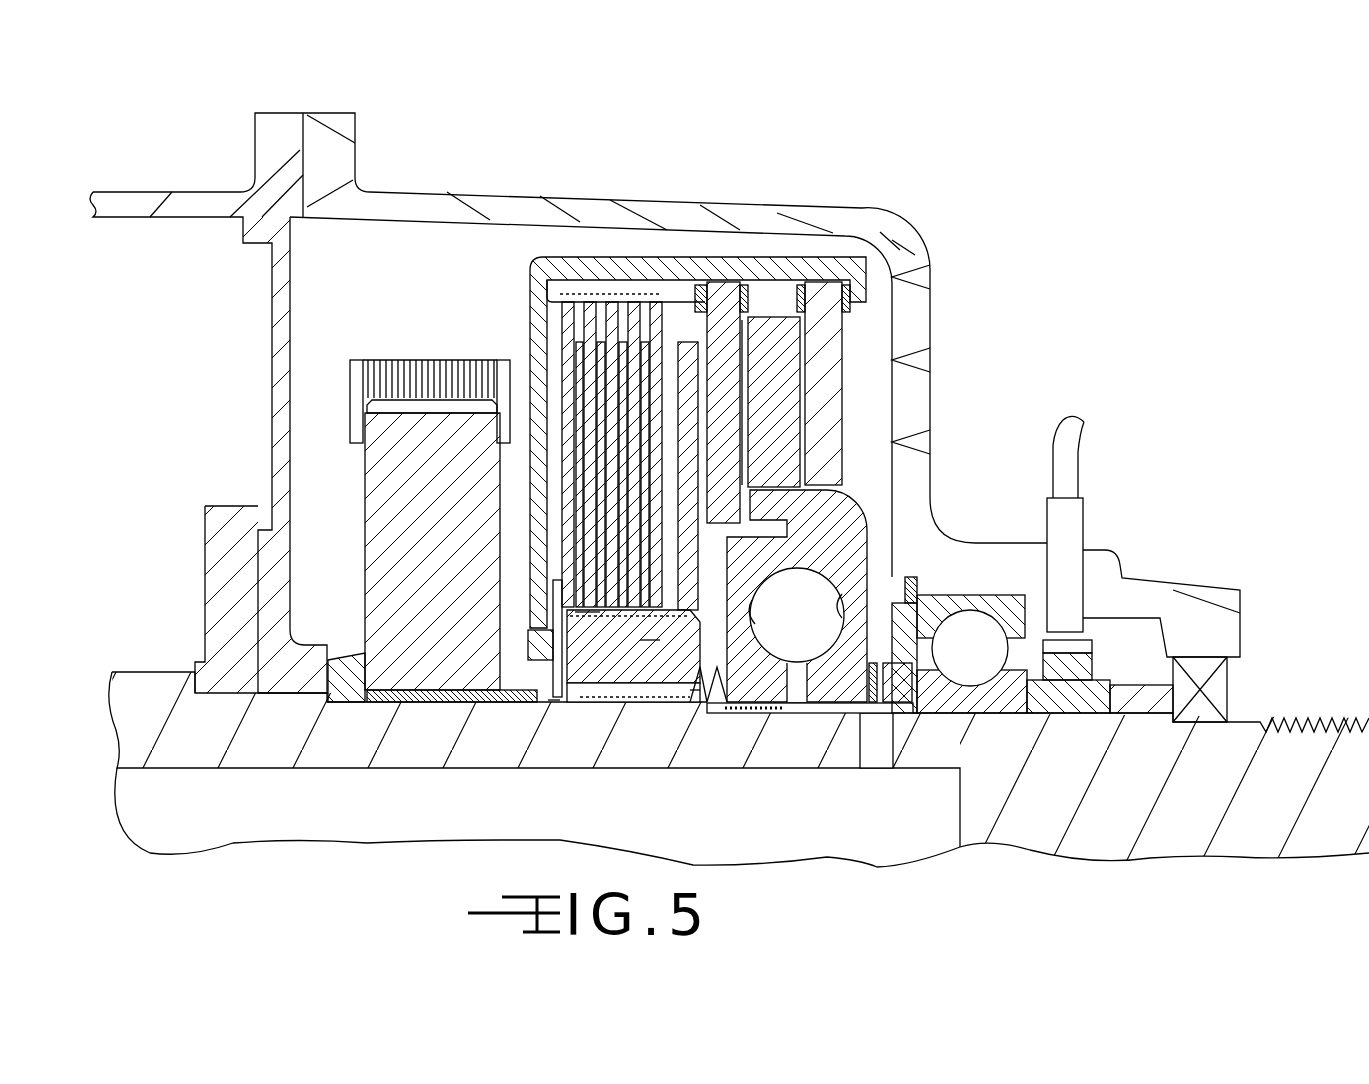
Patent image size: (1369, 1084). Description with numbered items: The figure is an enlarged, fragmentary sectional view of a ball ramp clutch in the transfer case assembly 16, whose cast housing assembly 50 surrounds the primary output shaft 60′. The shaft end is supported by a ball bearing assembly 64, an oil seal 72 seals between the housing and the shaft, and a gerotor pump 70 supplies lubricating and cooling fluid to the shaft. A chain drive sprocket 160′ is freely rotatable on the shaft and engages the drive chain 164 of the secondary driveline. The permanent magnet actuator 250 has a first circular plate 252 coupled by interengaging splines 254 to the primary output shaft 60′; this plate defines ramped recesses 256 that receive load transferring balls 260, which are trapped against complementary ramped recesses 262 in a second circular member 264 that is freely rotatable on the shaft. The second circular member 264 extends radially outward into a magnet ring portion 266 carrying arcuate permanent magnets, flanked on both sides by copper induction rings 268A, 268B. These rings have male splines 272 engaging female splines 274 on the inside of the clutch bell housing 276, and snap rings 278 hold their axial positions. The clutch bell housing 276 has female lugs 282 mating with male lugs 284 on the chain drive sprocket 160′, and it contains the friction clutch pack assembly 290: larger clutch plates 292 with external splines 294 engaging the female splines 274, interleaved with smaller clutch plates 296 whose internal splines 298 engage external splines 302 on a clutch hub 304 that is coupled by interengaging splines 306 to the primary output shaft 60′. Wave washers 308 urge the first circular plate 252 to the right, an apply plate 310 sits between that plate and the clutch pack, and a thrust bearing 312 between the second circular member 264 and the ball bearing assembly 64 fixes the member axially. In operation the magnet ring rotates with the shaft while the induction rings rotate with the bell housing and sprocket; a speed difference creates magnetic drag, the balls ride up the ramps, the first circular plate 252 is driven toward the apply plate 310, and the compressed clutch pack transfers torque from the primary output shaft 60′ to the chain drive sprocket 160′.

The transfer case assembly 16 is at (1052, 363).
The housing assembly 50 is at (390, 200).
The primary output shaft 60′ is at (1300, 763).
The ball bearing assembly 64 is at (975, 640).
The gerotor pump 70 is at (215, 520).
The oil seal 72 is at (1193, 665).
The chain drive sprocket 160′ is at (383, 530).
The drive chain 164 is at (405, 372).
The permanent magnet actuator 250 is at (838, 168).
The first circular plate 252 is at (755, 712).
The interengaging splines 254 is at (772, 708).
The ramped recesses 256 is at (706, 690).
The load transferring balls 260 is at (845, 440).
The ramped recesses 262 is at (797, 600).
The second circular member 264 is at (880, 480).
The magnet ring portion 266 is at (780, 357).
The copper induction ring 268A is at (822, 345).
The copper induction ring 268B is at (706, 298).
The male splines 272 is at (745, 290).
The female splines 274 is at (680, 296).
The clutch bell housing 276 is at (553, 265).
The snap rings 278 is at (800, 290).
The female splines 282 is at (538, 640).
The male splines 284 is at (530, 700).
The friction clutch pack assembly 290 is at (498, 431).
The larger clutch plates 292 is at (600, 328).
The external splines 294 is at (612, 300).
The smaller clutch plates 296 is at (600, 515).
The internal splines 298 is at (548, 695).
The external splines 302 is at (620, 700).
The clutch hub 304 is at (605, 660).
The interengaging splines 306 is at (650, 690).
The wave washers 308 is at (695, 690).
The apply plate 310 is at (744, 445).
The thrust bearing 312 is at (868, 740).